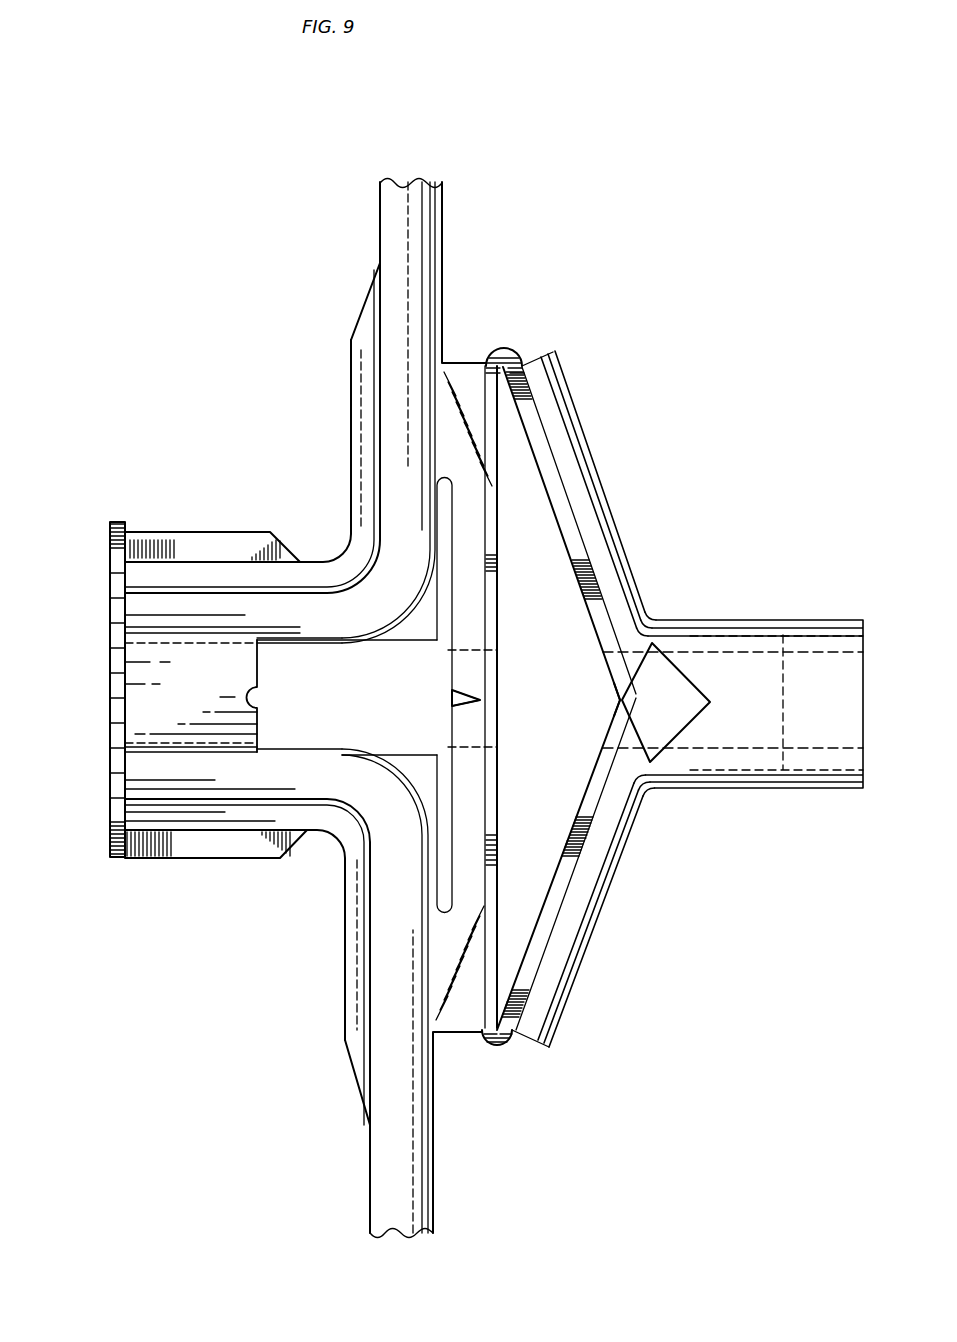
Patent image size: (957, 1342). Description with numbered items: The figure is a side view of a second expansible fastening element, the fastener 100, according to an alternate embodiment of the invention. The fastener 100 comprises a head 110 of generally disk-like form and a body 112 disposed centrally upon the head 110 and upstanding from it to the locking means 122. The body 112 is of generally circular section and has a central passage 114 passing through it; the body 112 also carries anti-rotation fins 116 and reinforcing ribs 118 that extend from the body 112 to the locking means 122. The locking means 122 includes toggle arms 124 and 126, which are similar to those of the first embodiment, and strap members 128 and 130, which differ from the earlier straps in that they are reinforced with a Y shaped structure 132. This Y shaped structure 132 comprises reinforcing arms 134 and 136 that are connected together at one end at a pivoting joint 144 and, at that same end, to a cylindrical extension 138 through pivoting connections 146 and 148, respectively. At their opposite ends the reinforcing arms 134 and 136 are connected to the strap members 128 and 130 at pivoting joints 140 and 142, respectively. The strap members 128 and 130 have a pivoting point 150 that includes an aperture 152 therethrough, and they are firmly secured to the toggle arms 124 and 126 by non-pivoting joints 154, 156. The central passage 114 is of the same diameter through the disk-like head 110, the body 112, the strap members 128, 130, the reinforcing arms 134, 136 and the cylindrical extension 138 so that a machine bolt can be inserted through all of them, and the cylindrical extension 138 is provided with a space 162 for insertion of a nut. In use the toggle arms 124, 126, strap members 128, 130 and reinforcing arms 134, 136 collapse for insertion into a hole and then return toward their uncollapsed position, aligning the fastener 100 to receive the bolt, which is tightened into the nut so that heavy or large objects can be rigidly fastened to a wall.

The fastener 100 is at (200, 328).
The head 110 is at (120, 521).
The body 112 is at (258, 682).
The central passage 114 is at (150, 646).
The anti-rotation fins 116 is at (210, 531).
The reinforcing ribs 118 is at (350, 458).
The locking means 122 is at (444, 176).
The toggle arm 124 is at (413, 328).
The toggle arm 126 is at (390, 1128).
The strap member 128 is at (467, 607).
The strap member 130 is at (490, 778).
The Y shaped structure 132 is at (633, 503).
The reinforcing arm 134 is at (582, 438).
The reinforcing arm 136 is at (601, 904).
The cylindrical extension 138 is at (776, 792).
The pivoting joint 140 is at (503, 350).
The pivoting joint 142 is at (505, 1045).
The pivoting joint 144 is at (614, 704).
The connection 146 is at (652, 613).
The connection 148 is at (647, 792).
The pivoting point 150 is at (497, 700).
The aperture 152 is at (552, 655).
The non-pivoting joint 154 is at (415, 458).
The non-pivoting joint 156 is at (395, 965).
The space 162 is at (838, 632).